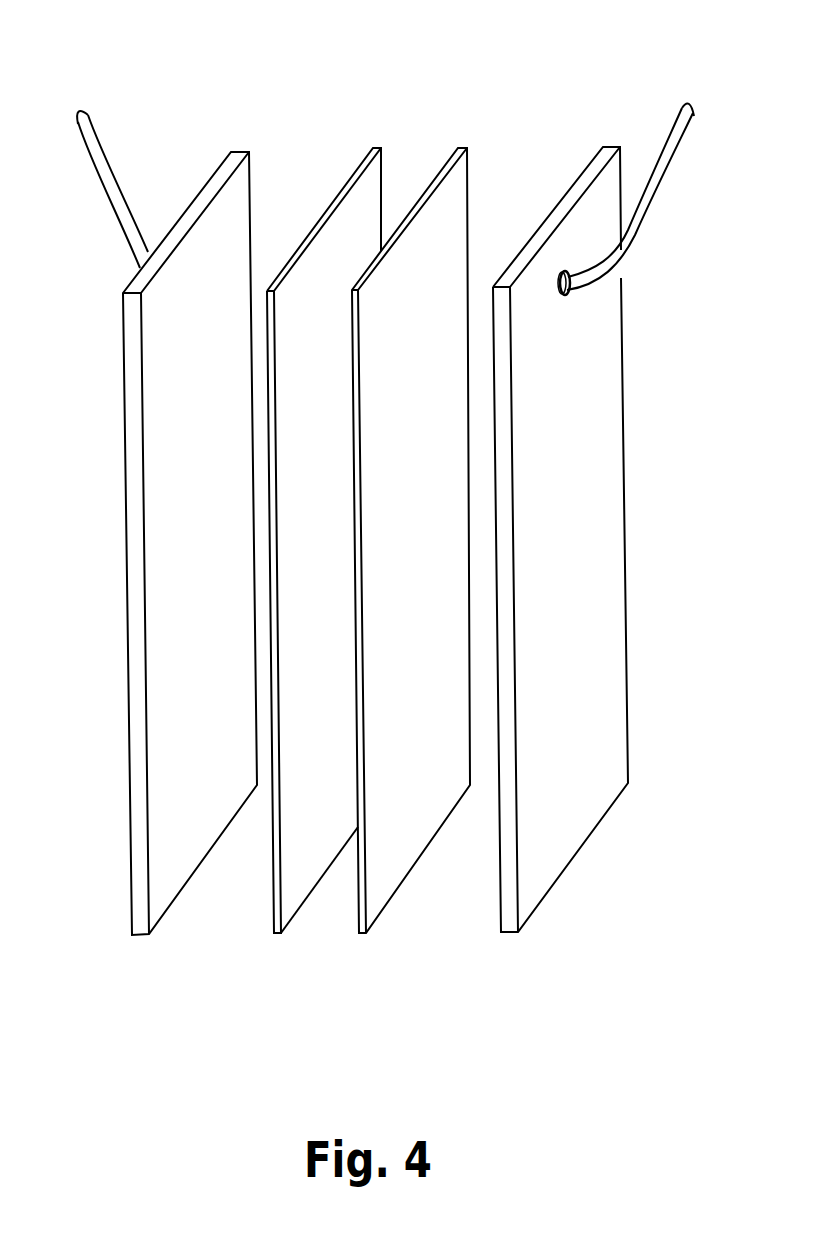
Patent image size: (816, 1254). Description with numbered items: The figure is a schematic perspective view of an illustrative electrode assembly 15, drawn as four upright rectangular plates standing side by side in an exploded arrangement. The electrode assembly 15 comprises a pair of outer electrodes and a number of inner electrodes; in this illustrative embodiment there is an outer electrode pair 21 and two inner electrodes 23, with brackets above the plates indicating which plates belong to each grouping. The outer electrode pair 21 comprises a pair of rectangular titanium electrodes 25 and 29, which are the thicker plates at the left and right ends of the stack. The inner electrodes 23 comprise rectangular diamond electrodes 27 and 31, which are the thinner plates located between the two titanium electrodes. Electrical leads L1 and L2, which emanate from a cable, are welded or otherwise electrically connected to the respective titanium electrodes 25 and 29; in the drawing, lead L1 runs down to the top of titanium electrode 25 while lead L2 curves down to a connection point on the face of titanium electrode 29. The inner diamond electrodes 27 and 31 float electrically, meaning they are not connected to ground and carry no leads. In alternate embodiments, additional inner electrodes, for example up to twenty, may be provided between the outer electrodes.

The electrode assembly 15 is at (232, 43).
The outer electrode pair 21 is at (612, 93).
The inner electrodes 23 is at (383, 143).
The titanium electrode 25 is at (142, 922).
The diamond electrode 27 is at (280, 922).
The diamond electrode 31 is at (366, 922).
The titanium electrode 29 is at (512, 918).
The electrical lead L1 is at (112, 185).
The electrical lead L2 is at (626, 195).